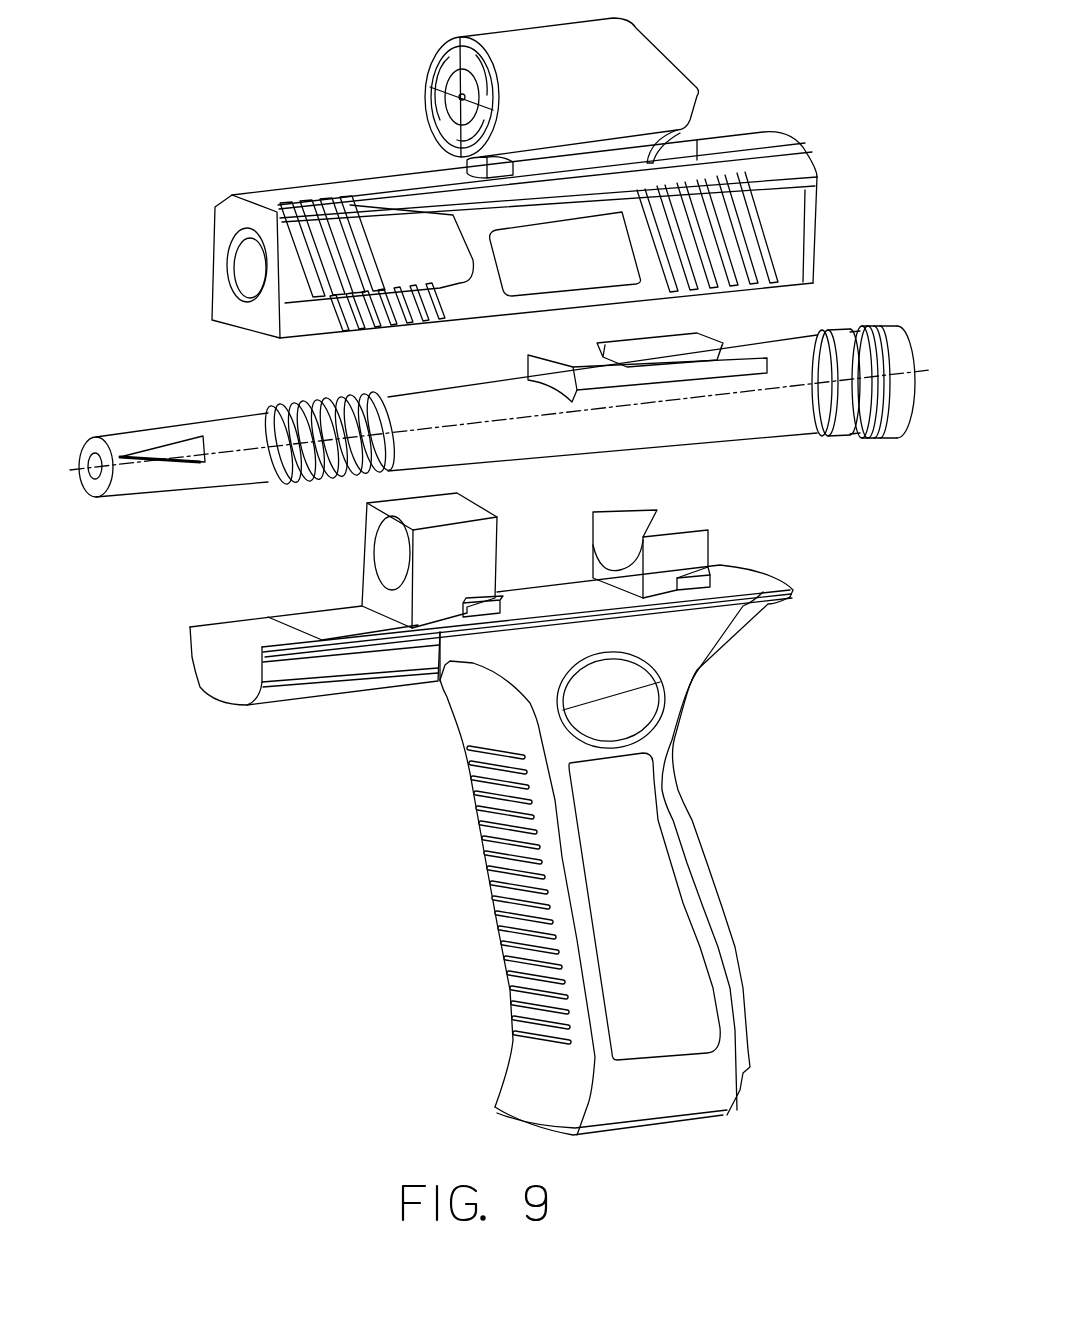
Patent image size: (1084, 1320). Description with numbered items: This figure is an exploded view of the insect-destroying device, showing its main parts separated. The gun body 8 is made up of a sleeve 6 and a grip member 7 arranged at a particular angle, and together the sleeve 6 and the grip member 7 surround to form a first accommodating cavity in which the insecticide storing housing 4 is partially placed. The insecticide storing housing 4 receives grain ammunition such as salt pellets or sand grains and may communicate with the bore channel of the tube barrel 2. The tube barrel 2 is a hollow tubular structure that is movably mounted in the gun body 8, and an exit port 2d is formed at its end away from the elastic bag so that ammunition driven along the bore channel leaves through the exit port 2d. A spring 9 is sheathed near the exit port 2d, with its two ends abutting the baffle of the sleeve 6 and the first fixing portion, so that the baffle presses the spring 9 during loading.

The tube barrel 2 is at (858, 392).
The exit port 2d is at (97, 440).
The insecticide storing housing 4 is at (638, 68).
The sleeve 6 is at (757, 143).
The grip member 7 is at (703, 875).
The gun body 8 is at (332, 660).
The spring 9 is at (281, 406).